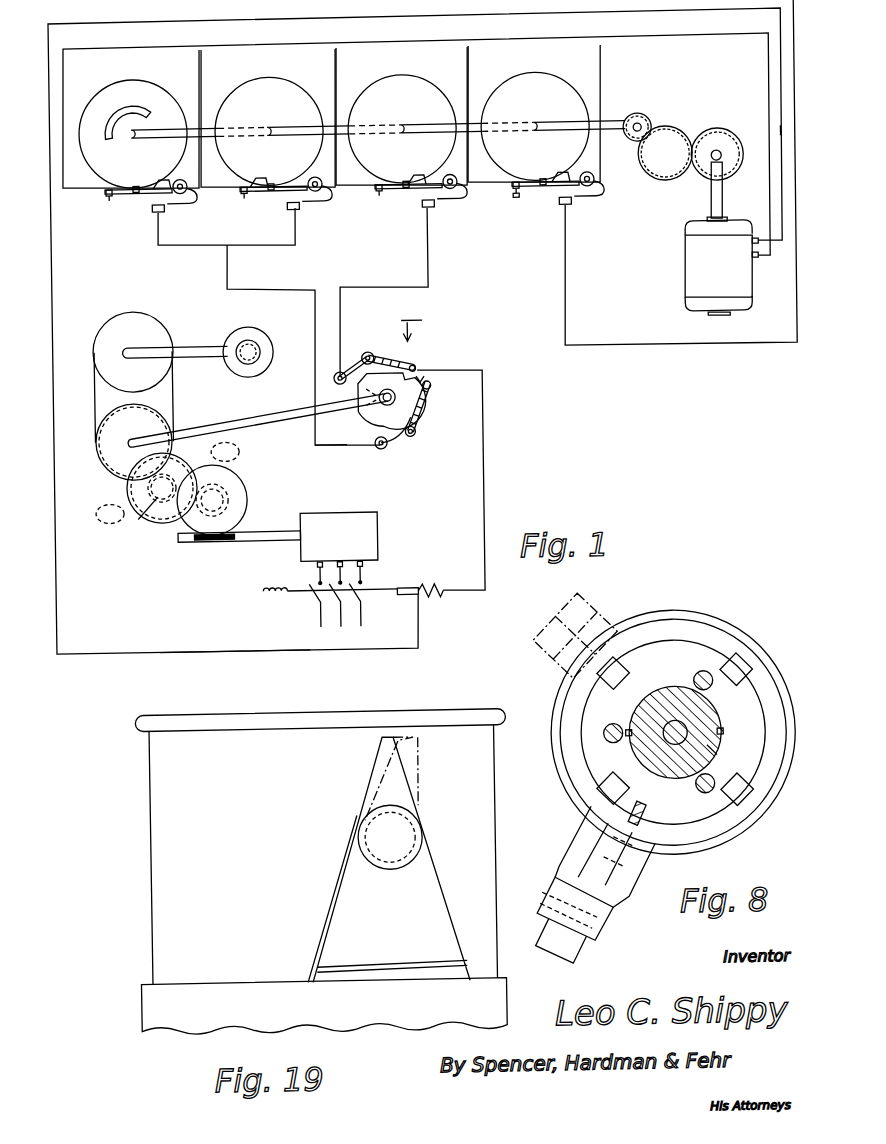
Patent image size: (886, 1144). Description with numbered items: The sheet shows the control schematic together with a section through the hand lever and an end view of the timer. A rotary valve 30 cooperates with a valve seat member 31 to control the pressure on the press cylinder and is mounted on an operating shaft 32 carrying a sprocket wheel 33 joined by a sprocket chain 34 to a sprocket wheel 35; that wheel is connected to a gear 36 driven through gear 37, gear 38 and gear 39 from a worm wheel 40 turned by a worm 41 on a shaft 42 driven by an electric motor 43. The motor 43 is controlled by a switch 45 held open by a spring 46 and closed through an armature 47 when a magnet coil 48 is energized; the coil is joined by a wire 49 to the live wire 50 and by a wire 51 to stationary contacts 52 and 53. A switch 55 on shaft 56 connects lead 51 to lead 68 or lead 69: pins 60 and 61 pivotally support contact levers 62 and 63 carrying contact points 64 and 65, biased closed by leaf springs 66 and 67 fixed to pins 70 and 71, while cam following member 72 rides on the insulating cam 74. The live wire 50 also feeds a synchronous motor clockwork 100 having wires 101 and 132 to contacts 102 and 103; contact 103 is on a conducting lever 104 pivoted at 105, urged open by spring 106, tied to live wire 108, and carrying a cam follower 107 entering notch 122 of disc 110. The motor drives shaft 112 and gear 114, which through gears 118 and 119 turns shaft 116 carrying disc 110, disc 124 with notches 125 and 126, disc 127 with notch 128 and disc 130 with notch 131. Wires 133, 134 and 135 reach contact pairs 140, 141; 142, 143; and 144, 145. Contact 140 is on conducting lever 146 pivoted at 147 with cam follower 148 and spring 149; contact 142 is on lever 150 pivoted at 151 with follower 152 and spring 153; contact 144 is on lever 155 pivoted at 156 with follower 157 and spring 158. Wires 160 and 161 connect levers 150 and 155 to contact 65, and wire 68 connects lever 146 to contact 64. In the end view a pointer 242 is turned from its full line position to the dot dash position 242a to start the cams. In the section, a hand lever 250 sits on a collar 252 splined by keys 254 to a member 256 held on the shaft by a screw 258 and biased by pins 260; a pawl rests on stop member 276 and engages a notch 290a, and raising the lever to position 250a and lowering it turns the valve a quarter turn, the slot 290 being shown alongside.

In FIG. 1, the 110 volt live wire 50 is at (44, 28).
In FIG. 1, the wire 135 is at (63, 74).
In FIG. 1, the wire 134 is at (200, 77).
In FIG. 1, the wire 133 is at (335, 78).
In FIG. 1, the wire 132 is at (467, 79).
In FIG. 1, the disc 130 is at (156, 97).
In FIG. 1, the disc 127 is at (276, 97).
In FIG. 1, the disc 124 is at (414, 98).
In FIG. 1, the disc 110 is at (571, 99).
In FIG. 1, the shaft 116 is at (601, 132).
In FIG. 19, the shaft 116 is at (377, 844).
In FIG. 1, the gear 119 is at (636, 126).
In FIG. 1, the gear 118 is at (670, 142).
In FIG. 1, the gear 114 is at (720, 143).
In FIG. 1, the shaft 112 is at (707, 212).
In FIG. 1, the synchronous motor clockwork 100 is at (681, 271).
In FIG. 1, the wire 101 is at (773, 145).
In FIG. 1, the 110 volt live wire 108 is at (562, 269).
In FIG. 1, the lead 68 is at (425, 273).
In FIG. 1, the wire 51 is at (476, 482).
In FIG. 1, the wire 49 is at (221, 654).
In FIG. 1, the wire 161 is at (174, 249).
In FIG. 1, the wire 160 is at (272, 251).
In FIG. 1, the conducting lever 155 is at (147, 199).
In FIG. 1, the switch contact 145 is at (105, 192).
In FIG. 1, the contact 144 is at (104, 198).
In FIG. 1, the cam follower 157 is at (130, 190).
In FIG. 1, the notch 131 is at (154, 184).
In FIG. 1, the pivot 156 is at (179, 185).
In FIG. 1, the conducting spring 158 is at (190, 204).
In FIG. 1, the conducting lever 150 is at (267, 197).
In FIG. 1, the switch contact 143 is at (237, 193).
In FIG. 1, the contact 142 is at (239, 201).
In FIG. 1, the cam follower 152 is at (270, 190).
In FIG. 1, the notch 128 is at (252, 184).
In FIG. 1, the pivot 151 is at (311, 184).
In FIG. 1, the conducting spring 153 is at (318, 208).
In FIG. 1, the notch 125 is at (381, 192).
In FIG. 1, the switch contact 141 is at (372, 193).
In FIG. 1, the contact 140 is at (376, 203).
In FIG. 1, the cam follower 148 is at (402, 189).
In FIG. 1, the notch 126 is at (416, 184).
In FIG. 1, the pivot 147 is at (449, 185).
In FIG. 1, the conducting lever 146 is at (410, 207).
In FIG. 1, the conducting spring 149 is at (456, 205).
In FIG. 1, the cam follower 107 is at (534, 197).
In FIG. 1, the contact 103 is at (509, 194).
In FIG. 1, the contact 102 is at (511, 204).
In FIG. 1, the notch 122 is at (542, 189).
In FIG. 1, the conducting lever 104 is at (555, 197).
In FIG. 1, the pivot 105 is at (590, 183).
In FIG. 1, the spring 106 is at (598, 204).
In FIG. 1, the sprocket wheel 33 is at (131, 318).
In FIG. 1, the operating shaft 32 is at (175, 348).
In FIG. 8, the operating shaft 32 is at (713, 742).
In FIG. 1, the valve seat member 31 is at (231, 338).
In FIG. 1, the rotary valve 30 is at (250, 348).
In FIG. 1, the sprocket chain 34 is at (89, 394).
In FIG. 1, the sprocket wheel 35 is at (91, 474).
In FIG. 1, the shaft 56 is at (262, 419).
In FIG. 1, the gear 36 is at (102, 478).
In FIG. 1, the gear 37 is at (110, 514).
In FIG. 1, the gear 38 is at (132, 523).
In FIG. 1, the gear 39 is at (225, 452).
In FIG. 1, the worm wheel 40 is at (226, 480).
In FIG. 1, the shaft 42 is at (254, 543).
In FIG. 1, the worm 41 is at (207, 550).
In FIG. 1, the electric motor 43 is at (344, 522).
In FIG. 1, the spring 46 is at (263, 595).
In FIG. 1, the switch 45 is at (303, 598).
In FIG. 1, the armature 47 is at (396, 595).
In FIG. 1, the magnet coil 48 is at (431, 595).
In FIG. 1, the stationary contact 52 is at (392, 401).
In FIG. 1, the cam 74 is at (372, 421).
In FIG. 1, the pin 60 is at (362, 359).
In FIG. 1, the contact lever 62 is at (374, 362).
In FIG. 1, the cam following member 72 is at (386, 372).
In FIG. 1, the contact point 64 is at (409, 374).
In FIG. 1, the conducting leaf spring 66 is at (350, 377).
In FIG. 1, the pin 70 is at (332, 378).
In FIG. 1, the switch 55 is at (410, 324).
In FIG. 1, the stationary contact 53 is at (415, 388).
In FIG. 1, the contact point 65 is at (425, 394).
In FIG. 1, the contact lever 63 is at (415, 426).
In FIG. 1, the pin 61 is at (406, 440).
In FIG. 1, the conducting leaf spring 67 is at (387, 450).
In FIG. 1, the pin 71 is at (374, 456).
In FIG. 1, the lead 69 is at (327, 451).
In FIG. 8, the lever 250 is at (720, 639).
In FIG. 8, the dot dash position of lever 250a is at (592, 623).
In FIG. 8, the member 256 is at (696, 725).
In FIG. 8, the pin 260 is at (692, 685).
In FIG. 8, the slot 290 is at (735, 679).
In FIG. 8, the notch 290a is at (614, 682).
In FIG. 8, the key 254 is at (614, 750).
In FIG. 8, the screw 258 is at (701, 766).
In FIG. 8, the member 276 is at (627, 818).
In FIG. 8, the collar 252 is at (756, 793).
In FIG. 19, the pointer 242 is at (356, 785).
In FIG. 19, the dot dash position of pointer 242a is at (413, 771).